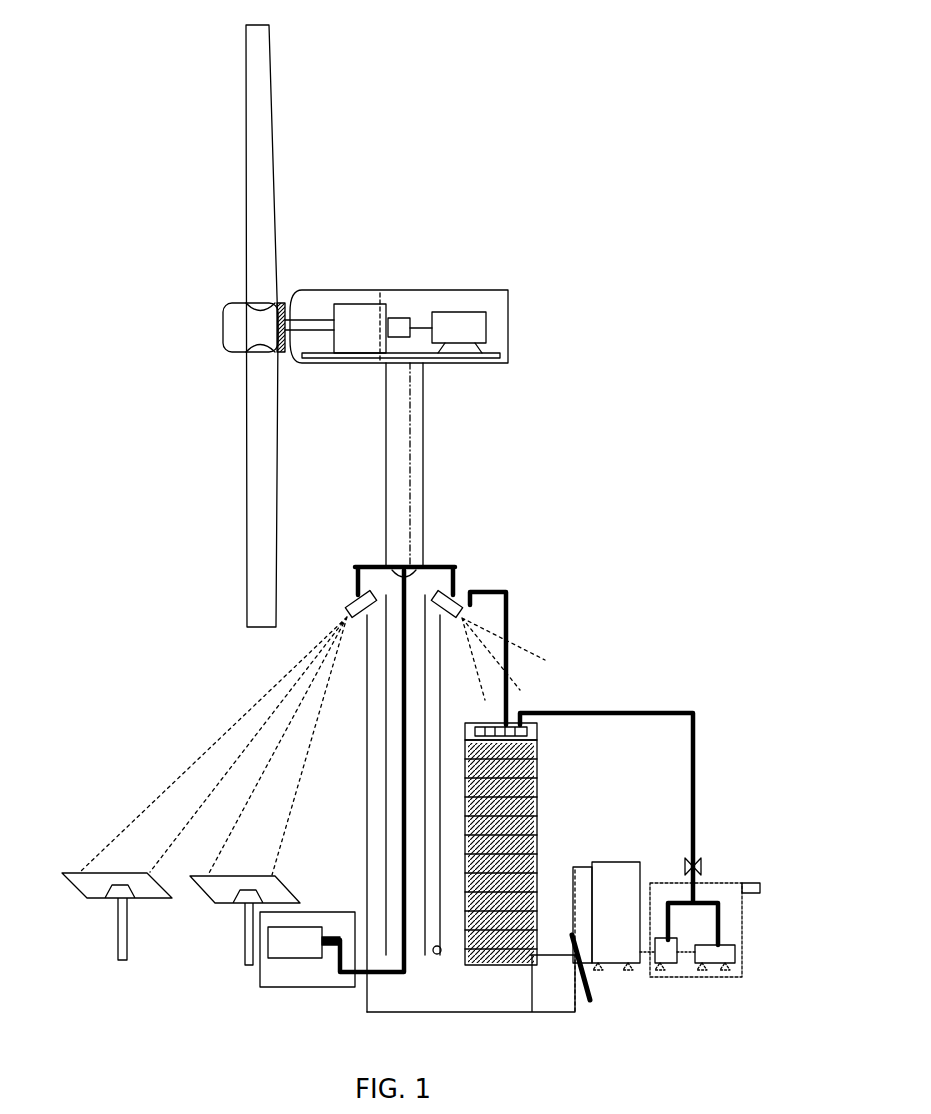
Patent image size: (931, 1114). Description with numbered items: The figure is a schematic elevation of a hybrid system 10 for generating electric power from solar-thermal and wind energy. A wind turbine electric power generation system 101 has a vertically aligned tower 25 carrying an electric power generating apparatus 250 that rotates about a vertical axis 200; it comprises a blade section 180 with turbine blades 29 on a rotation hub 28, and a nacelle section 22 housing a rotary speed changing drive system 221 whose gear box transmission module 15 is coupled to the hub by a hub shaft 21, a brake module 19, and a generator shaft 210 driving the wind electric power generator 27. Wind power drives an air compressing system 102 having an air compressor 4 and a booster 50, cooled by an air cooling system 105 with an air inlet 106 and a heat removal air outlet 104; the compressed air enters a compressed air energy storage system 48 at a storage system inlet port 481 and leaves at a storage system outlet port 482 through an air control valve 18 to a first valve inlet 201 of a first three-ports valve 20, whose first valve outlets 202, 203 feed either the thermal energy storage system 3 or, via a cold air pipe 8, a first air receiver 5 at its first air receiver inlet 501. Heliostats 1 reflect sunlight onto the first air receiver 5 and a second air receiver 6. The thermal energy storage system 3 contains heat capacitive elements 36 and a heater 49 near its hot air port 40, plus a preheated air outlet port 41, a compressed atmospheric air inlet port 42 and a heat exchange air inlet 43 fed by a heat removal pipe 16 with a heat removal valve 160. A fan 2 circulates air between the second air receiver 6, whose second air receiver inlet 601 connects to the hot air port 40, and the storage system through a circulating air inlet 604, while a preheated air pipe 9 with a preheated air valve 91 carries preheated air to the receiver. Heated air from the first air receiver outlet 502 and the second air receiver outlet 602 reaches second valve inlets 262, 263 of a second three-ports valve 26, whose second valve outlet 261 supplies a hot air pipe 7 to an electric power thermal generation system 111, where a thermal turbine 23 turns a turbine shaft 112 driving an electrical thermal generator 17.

The heliostats 1 is at (72, 900).
The fan 2 is at (503, 977).
The thermal energy storage system 3 is at (504, 958).
The air compressor 4 is at (716, 967).
The first air receiver 5 is at (340, 612).
The second air receiver 6 is at (472, 614).
The hot air pipe 7 is at (402, 763).
The cold air pipe 8 is at (366, 845).
The preheated air pipe 9 is at (442, 688).
The hybrid system 10 is at (516, 233).
The gear box transmission module 15 is at (358, 310).
The heat removal pipe 16 is at (680, 712).
The electrical thermal generator 17 is at (278, 985).
The air control valve 18 is at (577, 866).
The brake module 19 is at (402, 320).
The first three-ports valve 20 is at (560, 945).
The hub shaft 21 is at (312, 322).
The nacelle section 22 is at (334, 276).
The thermal turbine 23 is at (341, 975).
The tower 25 is at (392, 470).
The second three-ports valve 26 is at (395, 565).
The wind electric power generator 27 is at (455, 316).
The rotation hub 28 is at (225, 322).
The turbine blades 29 is at (258, 140).
The heat capacitive elements 36 is at (548, 764).
The hot air port 40 is at (508, 718).
The preheated air outlet port 41 is at (458, 960).
The compressed atmospheric air inlet port 42 is at (532, 960).
The heat exchange air inlet 43 is at (528, 715).
The compressed air energy storage system 48 is at (613, 968).
The heater 49 is at (540, 735).
The booster 50 is at (665, 967).
The preheated air valve 91 is at (471, 983).
The wind turbine electric power generation system 101 is at (455, 174).
The air compressing system 102 is at (765, 994).
The heat removal air outlet 104 is at (695, 905).
The air cooling system 105 is at (745, 913).
The air inlet 106 is at (760, 884).
The electric power thermal generation system 111 is at (182, 1005).
The turbine shaft 112 is at (312, 958).
The heat removal valve 160 is at (702, 862).
The blade section 180 is at (187, 380).
The vertical axis 200 is at (420, 414).
The first valve inlet 201 is at (570, 900).
The first valve outlet 202 is at (575, 1012).
The first valve outlet 203 is at (575, 1005).
The generator shaft 210 is at (428, 318).
The rotary speed changing drive system 221 is at (384, 284).
The electric power generating apparatus 250 is at (160, 187).
The second valve outlet 261 is at (458, 580).
The second valve inlet 262 is at (388, 565).
The second valve inlet 263 is at (418, 565).
The storage system inlet port 481 is at (645, 975).
The storage system outlet port 482 is at (600, 860).
The first air receiver inlet 501 is at (348, 622).
The first air receiver outlet 502 is at (334, 600).
The second air receiver inlet 601 is at (470, 622).
The second air receiver outlet 602 is at (478, 590).
The circulating air inlet 604 is at (490, 597).